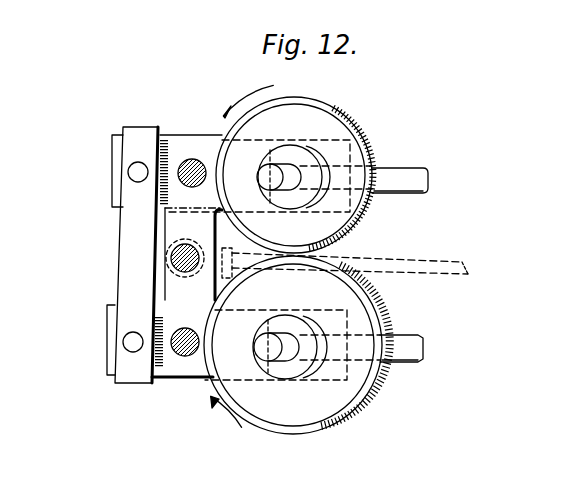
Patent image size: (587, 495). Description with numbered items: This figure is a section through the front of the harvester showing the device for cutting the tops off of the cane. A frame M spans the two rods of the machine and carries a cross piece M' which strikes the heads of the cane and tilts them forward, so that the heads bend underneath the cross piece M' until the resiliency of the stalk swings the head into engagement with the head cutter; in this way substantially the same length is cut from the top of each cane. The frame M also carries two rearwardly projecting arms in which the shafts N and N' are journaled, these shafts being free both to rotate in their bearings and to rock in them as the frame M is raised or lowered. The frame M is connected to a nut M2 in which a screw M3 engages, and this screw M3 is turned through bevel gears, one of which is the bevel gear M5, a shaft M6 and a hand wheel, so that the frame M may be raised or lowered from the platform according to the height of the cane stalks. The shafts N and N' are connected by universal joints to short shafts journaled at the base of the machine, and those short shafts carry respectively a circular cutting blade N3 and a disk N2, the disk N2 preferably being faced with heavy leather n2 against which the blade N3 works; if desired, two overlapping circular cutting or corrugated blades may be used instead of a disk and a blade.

The frame M is at (132, 256).
The cross piece M' is at (108, 255).
The nut M2 is at (173, 268).
The screw M3 is at (172, 252).
The bevel gear M5 is at (199, 242).
The shaft M6 is at (445, 262).
The shaft N is at (408, 367).
The shaft N' is at (414, 165).
The disk N2 is at (322, 405).
The circular cutting blade N3 is at (333, 130).
The heavy leather n2 is at (373, 386).